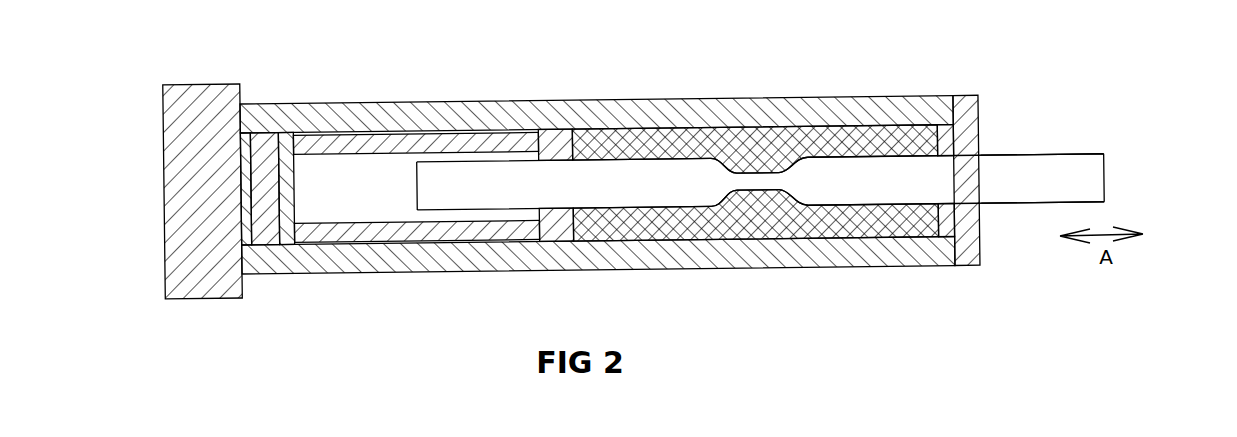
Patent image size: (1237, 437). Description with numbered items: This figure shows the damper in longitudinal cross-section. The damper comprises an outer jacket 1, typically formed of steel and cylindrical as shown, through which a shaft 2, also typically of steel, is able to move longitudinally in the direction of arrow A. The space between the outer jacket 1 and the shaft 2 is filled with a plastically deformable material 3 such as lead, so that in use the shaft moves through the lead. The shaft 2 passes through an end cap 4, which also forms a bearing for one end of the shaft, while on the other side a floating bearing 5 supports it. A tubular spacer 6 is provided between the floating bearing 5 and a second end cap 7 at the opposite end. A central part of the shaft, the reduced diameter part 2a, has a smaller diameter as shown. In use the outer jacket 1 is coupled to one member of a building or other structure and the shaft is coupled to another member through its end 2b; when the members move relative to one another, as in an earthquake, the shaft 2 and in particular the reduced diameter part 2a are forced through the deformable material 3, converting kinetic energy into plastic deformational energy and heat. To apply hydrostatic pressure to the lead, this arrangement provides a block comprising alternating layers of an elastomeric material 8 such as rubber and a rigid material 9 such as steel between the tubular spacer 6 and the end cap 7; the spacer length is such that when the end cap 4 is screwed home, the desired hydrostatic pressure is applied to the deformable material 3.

The outer jacket 1 is at (718, 110).
The shaft 2 is at (618, 182).
The reduced diameter part of the shaft 2a is at (750, 180).
The end of the shaft 2b is at (1103, 175).
The deformable material 3 is at (840, 138).
The end cap 4 is at (968, 128).
The floating bearing 5 is at (549, 138).
The tubular spacer 6 is at (402, 136).
The end cap 7 is at (163, 150).
The elastomeric material 8 is at (265, 145).
The rigid material 9 is at (242, 152).